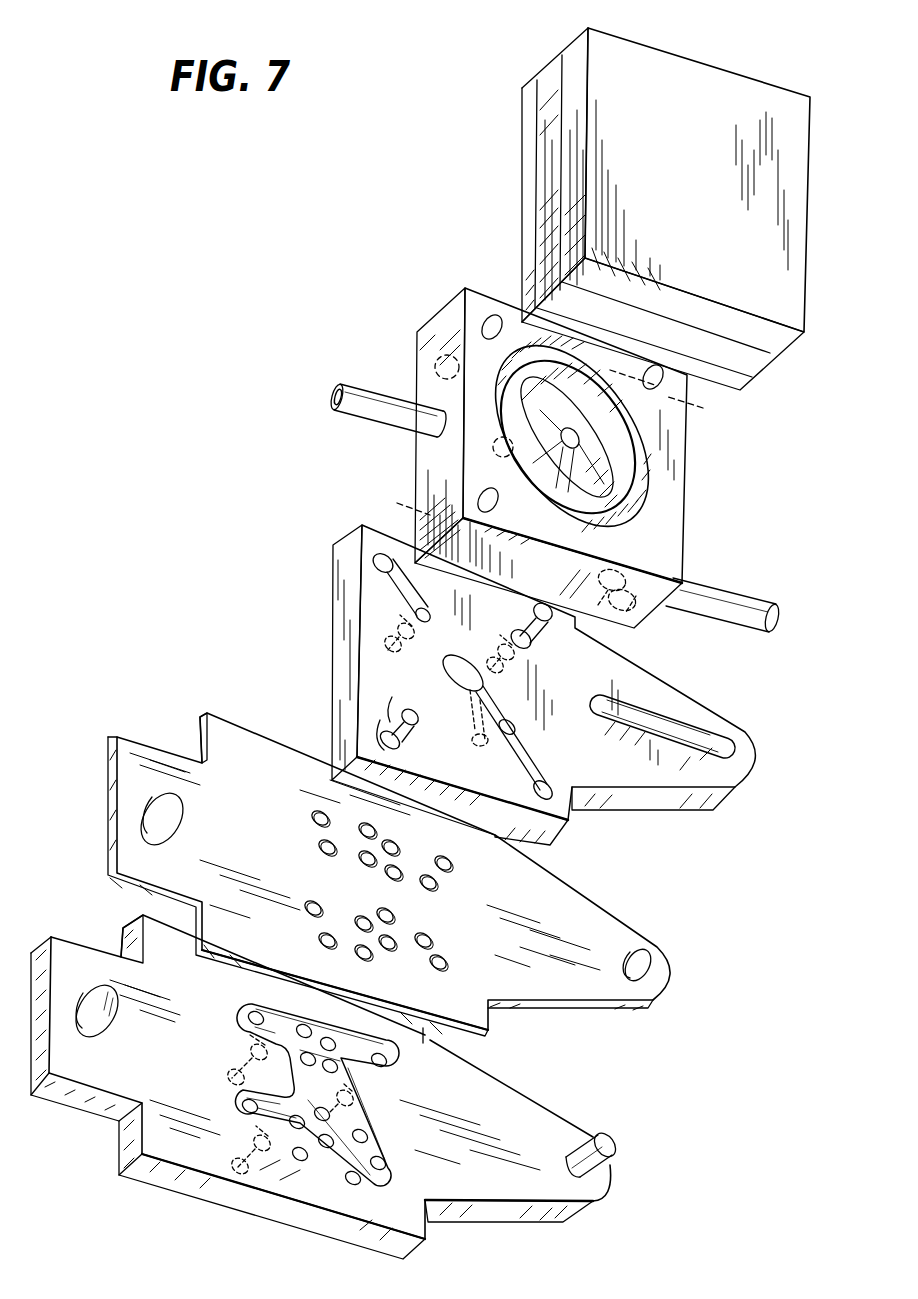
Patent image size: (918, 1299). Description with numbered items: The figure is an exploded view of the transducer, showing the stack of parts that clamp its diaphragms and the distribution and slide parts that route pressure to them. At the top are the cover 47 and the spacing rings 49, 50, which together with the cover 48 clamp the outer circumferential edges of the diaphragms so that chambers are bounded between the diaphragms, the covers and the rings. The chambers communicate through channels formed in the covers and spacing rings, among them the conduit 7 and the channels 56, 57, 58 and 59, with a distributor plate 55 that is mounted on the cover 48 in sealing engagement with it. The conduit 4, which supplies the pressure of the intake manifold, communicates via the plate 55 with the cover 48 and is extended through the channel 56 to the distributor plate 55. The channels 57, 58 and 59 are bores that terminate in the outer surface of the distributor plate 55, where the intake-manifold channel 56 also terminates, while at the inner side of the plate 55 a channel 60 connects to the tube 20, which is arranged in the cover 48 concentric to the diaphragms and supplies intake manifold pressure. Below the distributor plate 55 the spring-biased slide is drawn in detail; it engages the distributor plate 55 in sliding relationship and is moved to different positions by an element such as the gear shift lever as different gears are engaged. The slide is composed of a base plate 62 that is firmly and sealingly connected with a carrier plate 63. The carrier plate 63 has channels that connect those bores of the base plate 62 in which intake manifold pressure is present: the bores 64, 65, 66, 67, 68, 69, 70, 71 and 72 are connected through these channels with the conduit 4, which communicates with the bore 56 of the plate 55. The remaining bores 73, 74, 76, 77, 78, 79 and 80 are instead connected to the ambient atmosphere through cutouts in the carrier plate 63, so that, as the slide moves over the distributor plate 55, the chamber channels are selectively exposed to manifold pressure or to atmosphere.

The conduit 4 is at (733, 592).
The conduit 7 is at (363, 422).
The tube 20 is at (572, 462).
The cover 47 is at (575, 60).
The cover 48 is at (428, 322).
The spacing ring 49 is at (553, 83).
The spacing ring 50 is at (532, 100).
The distributor plate 55 is at (335, 578).
The channel 56 is at (643, 623).
The channel 57 is at (399, 619).
The channel 58 is at (515, 654).
The channel 59 is at (460, 353).
The channel 60 is at (366, 1121).
The base plate 62 is at (210, 716).
The carrier plate 63 is at (136, 925).
The bore 64 is at (360, 864).
The bore 65 is at (378, 970).
The bore 66 is at (396, 842).
The bore 67 is at (314, 813).
The bore 68 is at (311, 915).
The bore 69 is at (430, 936).
The bore 70 is at (450, 859).
The bore 71 is at (372, 824).
The bore 72 is at (360, 918).
The bore 73 is at (392, 950).
The bore 74 is at (320, 846).
The bore 76 is at (445, 960).
The bore 77 is at (438, 886).
The bore 78 is at (391, 911).
The bore 79 is at (389, 877).
The bore 80 is at (324, 947).